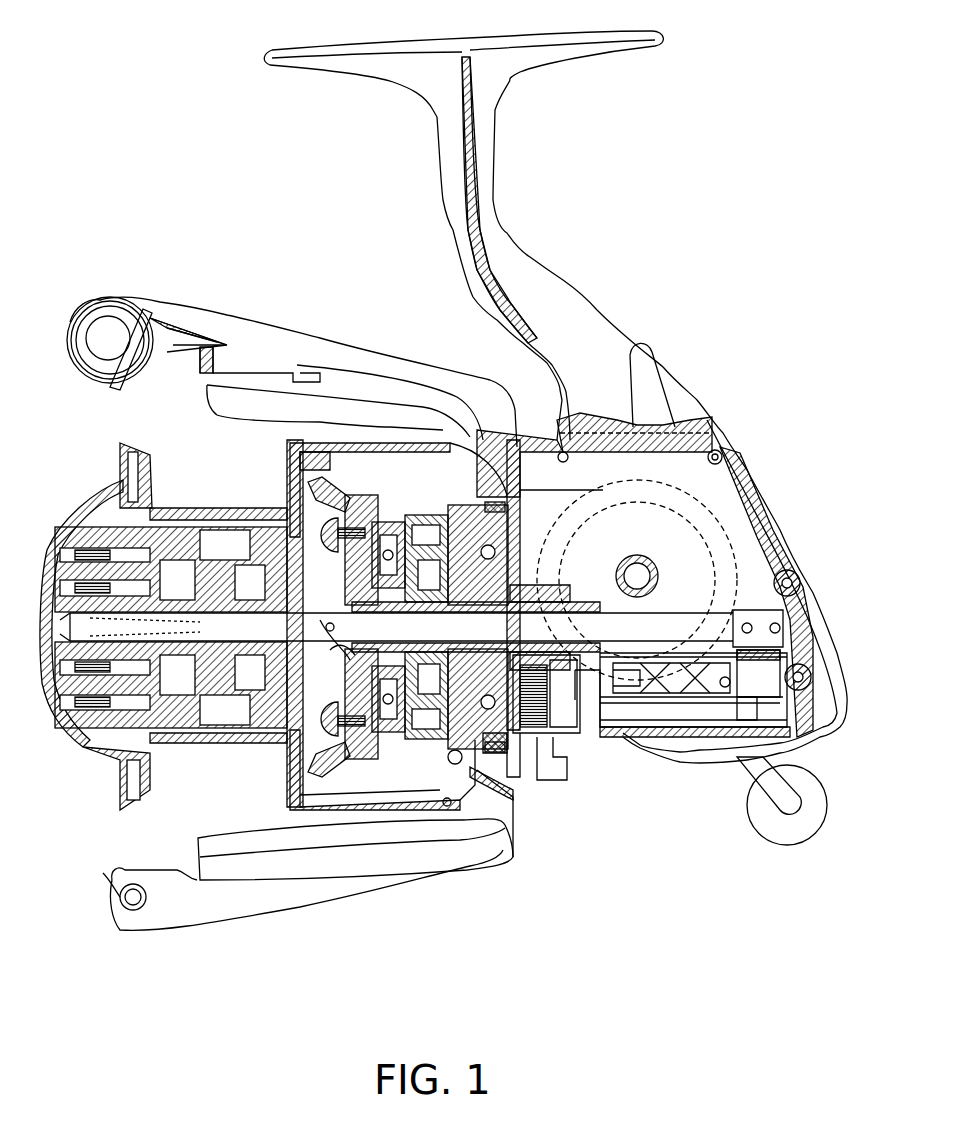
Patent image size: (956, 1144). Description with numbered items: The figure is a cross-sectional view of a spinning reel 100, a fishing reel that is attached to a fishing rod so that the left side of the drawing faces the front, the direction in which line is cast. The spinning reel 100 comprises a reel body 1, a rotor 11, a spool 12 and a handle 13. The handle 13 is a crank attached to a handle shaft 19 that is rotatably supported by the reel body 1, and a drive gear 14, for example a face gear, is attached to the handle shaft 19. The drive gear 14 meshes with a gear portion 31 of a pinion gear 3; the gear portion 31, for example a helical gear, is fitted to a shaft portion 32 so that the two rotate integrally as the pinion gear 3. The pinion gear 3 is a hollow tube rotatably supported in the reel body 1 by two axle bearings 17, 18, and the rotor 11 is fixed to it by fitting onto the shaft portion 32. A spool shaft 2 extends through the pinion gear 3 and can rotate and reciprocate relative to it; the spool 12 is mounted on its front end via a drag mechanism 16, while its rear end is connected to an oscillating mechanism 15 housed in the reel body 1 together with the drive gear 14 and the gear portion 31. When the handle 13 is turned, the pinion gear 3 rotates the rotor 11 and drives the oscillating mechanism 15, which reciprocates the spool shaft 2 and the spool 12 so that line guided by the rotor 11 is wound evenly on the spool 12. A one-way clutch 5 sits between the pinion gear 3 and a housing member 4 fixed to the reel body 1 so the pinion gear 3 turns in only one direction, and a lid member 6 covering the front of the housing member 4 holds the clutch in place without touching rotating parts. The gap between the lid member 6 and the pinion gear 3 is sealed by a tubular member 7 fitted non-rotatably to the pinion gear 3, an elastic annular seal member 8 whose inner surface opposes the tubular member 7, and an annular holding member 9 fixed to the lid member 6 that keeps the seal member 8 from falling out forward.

The spinning reel 100 is at (683, 131).
The reel body 1 is at (690, 398).
The spool shaft 2 is at (633, 627).
The pinion gear 3 is at (497, 690).
The housing member 4 is at (517, 437).
The one-way clutch 5 is at (443, 433).
The lid member 6 is at (385, 520).
The tubular member 7 is at (358, 725).
The seal member 8 is at (400, 705).
The holding member 9 is at (377, 720).
The rotor 11 is at (397, 345).
The spool 12 is at (188, 508).
The handle 13 is at (787, 849).
The drive gear 14 is at (753, 476).
The oscillating mechanism 15 is at (687, 700).
The drag mechanism 16 is at (210, 740).
The axle bearing 17 is at (580, 690).
The axle bearing 18 is at (470, 703).
The handle shaft 19 is at (648, 572).
The gear portion 31 is at (557, 703).
The shaft portion 32 is at (433, 695).